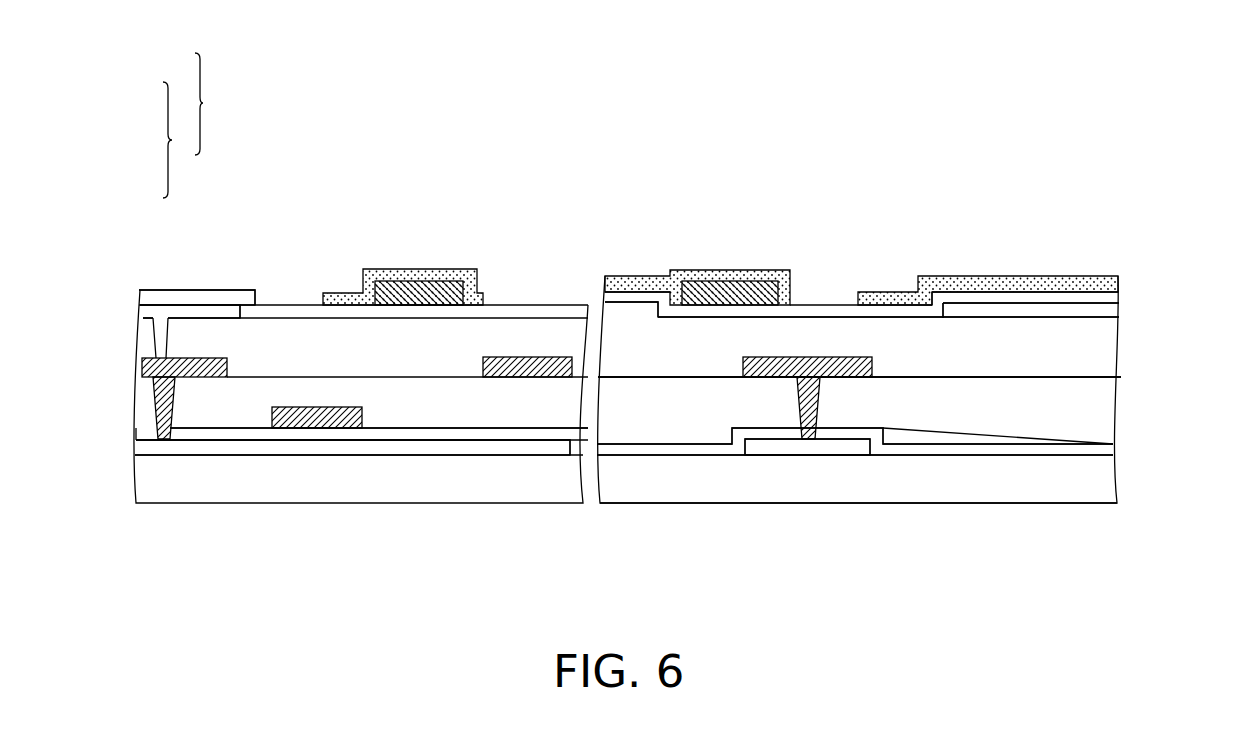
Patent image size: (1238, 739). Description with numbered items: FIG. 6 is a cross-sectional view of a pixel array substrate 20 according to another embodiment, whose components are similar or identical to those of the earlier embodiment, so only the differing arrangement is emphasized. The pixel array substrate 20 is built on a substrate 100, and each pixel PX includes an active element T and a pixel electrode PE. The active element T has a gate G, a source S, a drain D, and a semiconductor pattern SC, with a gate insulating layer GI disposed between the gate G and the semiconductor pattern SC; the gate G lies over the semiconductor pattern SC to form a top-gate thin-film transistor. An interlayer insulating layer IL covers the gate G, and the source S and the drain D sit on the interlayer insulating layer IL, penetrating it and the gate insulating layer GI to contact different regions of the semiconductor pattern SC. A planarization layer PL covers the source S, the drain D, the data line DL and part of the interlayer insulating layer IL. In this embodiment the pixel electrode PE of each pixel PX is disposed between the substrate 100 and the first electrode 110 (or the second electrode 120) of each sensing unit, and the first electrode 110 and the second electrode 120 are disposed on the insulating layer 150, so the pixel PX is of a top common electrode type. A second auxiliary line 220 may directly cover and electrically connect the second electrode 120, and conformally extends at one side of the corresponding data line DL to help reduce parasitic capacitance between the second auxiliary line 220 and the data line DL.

The insulating layer 150 is at (148, 297).
The second auxiliary line 220 is at (394, 276).
The second electrode 120 is at (447, 275).
The first electrode 110 is at (1110, 280).
The substrate 100 is at (1103, 478).
The pixel array substrate 20 is at (1142, 602).
The pixel electrode PE is at (203, 308).
The drain D is at (143, 368).
The data line DL is at (530, 357).
The source S is at (807, 367).
The gate G is at (316, 418).
The gate insulating layer GI is at (140, 435).
The semiconductor pattern SC is at (413, 450).
The planarization layer PL is at (1112, 352).
The interlayer insulating layer IL is at (1103, 412).
The active element T is at (175, 140).
The pixel PX is at (216, 104).